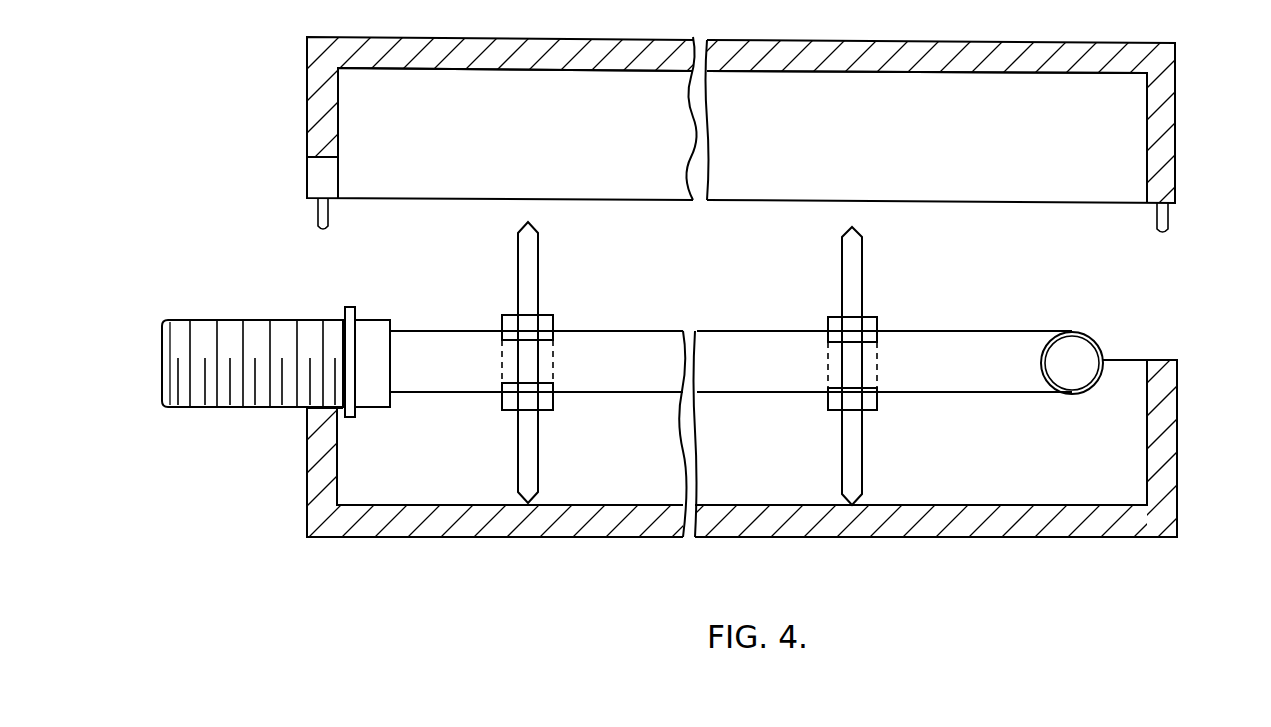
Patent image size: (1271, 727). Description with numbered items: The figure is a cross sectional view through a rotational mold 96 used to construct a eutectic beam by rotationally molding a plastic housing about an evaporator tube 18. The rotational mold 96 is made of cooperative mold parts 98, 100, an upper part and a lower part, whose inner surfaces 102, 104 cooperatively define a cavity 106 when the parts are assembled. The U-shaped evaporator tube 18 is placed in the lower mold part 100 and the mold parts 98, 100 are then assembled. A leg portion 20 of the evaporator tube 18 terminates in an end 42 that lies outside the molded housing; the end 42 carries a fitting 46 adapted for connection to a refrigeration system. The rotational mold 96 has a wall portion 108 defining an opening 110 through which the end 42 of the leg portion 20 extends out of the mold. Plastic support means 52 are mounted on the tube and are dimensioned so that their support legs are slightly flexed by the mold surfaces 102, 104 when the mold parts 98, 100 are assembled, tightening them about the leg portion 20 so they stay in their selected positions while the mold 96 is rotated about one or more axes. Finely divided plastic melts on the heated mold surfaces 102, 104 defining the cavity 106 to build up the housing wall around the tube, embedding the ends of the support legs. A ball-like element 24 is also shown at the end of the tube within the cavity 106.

The evaporator tube 18 is at (967, 333).
The first leg portion 20 is at (762, 345).
The ball end 24 is at (1070, 333).
The end 42 is at (242, 344).
The fitting 46 is at (257, 320).
The plastic support means 52 is at (538, 262).
The rotational mold 96 is at (1181, 207).
The mold part 98 is at (1177, 70).
The mold part 100 is at (1178, 465).
The inner surface 102 is at (1070, 74).
The inner surface 104 is at (995, 504).
The cavity 106 is at (1110, 420).
The wall portion 108 is at (318, 455).
The opening 110 is at (307, 404).